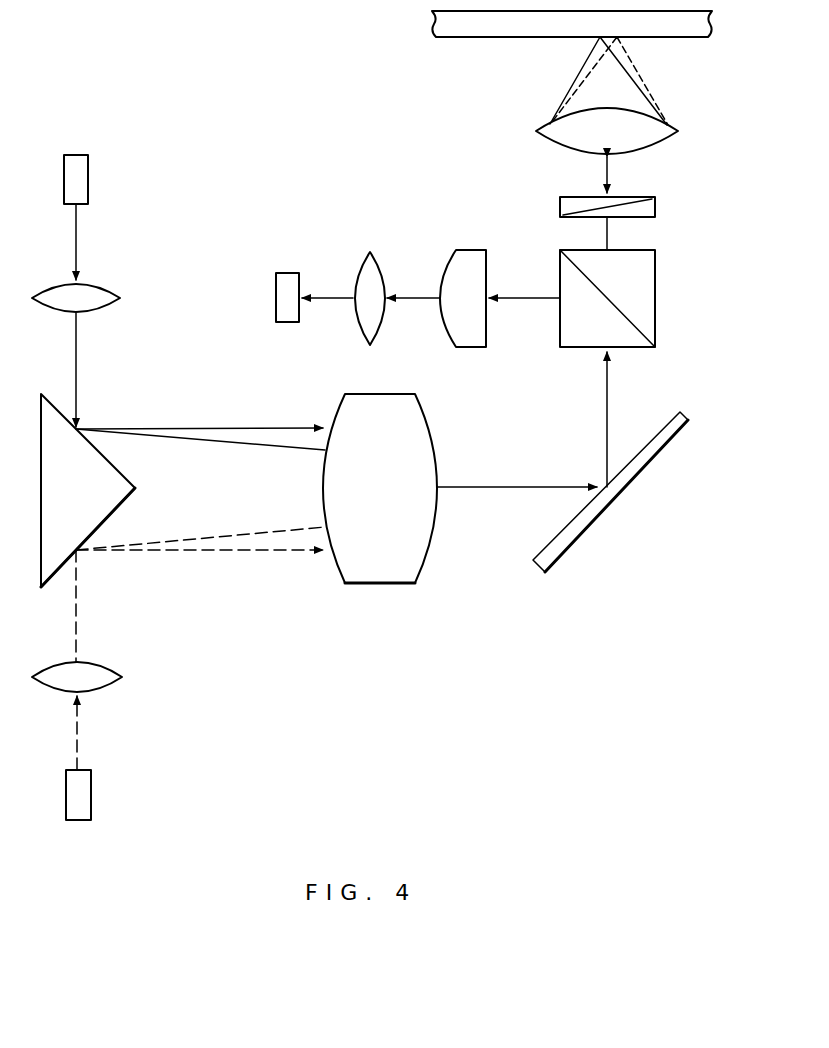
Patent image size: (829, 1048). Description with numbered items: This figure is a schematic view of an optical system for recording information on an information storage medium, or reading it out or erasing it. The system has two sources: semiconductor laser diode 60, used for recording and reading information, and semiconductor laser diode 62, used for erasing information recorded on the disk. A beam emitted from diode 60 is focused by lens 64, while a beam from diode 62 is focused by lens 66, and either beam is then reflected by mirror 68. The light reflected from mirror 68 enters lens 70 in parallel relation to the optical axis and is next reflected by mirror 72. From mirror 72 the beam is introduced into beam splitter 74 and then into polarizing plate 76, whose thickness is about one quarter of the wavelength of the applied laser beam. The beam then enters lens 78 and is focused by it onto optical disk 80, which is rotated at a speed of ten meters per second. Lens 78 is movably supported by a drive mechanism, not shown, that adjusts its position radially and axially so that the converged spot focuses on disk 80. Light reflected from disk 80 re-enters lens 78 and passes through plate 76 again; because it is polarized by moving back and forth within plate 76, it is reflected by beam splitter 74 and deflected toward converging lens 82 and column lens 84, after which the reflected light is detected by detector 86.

The semiconductor laser diode 60 is at (90, 180).
The semiconductor laser diode 62 is at (92, 797).
The lens 64 is at (113, 290).
The lens 66 is at (117, 670).
The mirror 68 is at (125, 477).
The lens 70 is at (339, 571).
The mirror 72 is at (683, 412).
The beam splitter 74 is at (657, 325).
The polarizing plate 76 is at (657, 207).
The lens 78 is at (673, 128).
The optical disk 80 is at (467, 38).
The converging lens 82 is at (478, 252).
The column lens 84 is at (375, 265).
The detector 86 is at (292, 273).